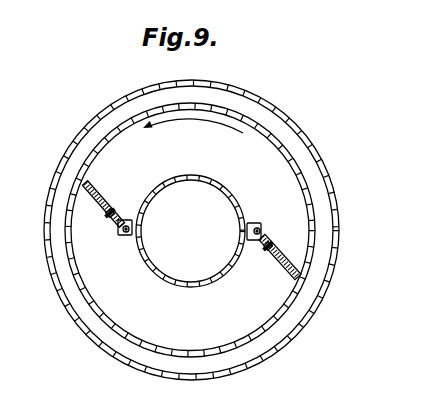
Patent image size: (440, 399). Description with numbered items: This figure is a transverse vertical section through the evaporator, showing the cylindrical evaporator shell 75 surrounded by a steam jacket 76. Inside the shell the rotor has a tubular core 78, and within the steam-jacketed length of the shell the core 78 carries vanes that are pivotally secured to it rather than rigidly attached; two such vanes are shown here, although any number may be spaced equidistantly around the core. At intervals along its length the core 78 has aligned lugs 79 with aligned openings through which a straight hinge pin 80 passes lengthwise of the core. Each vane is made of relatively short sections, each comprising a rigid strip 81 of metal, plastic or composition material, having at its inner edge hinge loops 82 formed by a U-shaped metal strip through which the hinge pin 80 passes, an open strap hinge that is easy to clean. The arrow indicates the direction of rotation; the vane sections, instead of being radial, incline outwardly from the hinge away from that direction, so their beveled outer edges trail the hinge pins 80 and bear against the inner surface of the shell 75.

The cylindrical evaporator shell 75 is at (118, 333).
The steam jacket 76 is at (80, 330).
The tubular core 78 is at (191, 175).
The lugs 79 is at (130, 236).
The hinge pin 80 is at (123, 231).
The strip 81 is at (102, 196).
The hinge loops 82 is at (108, 216).